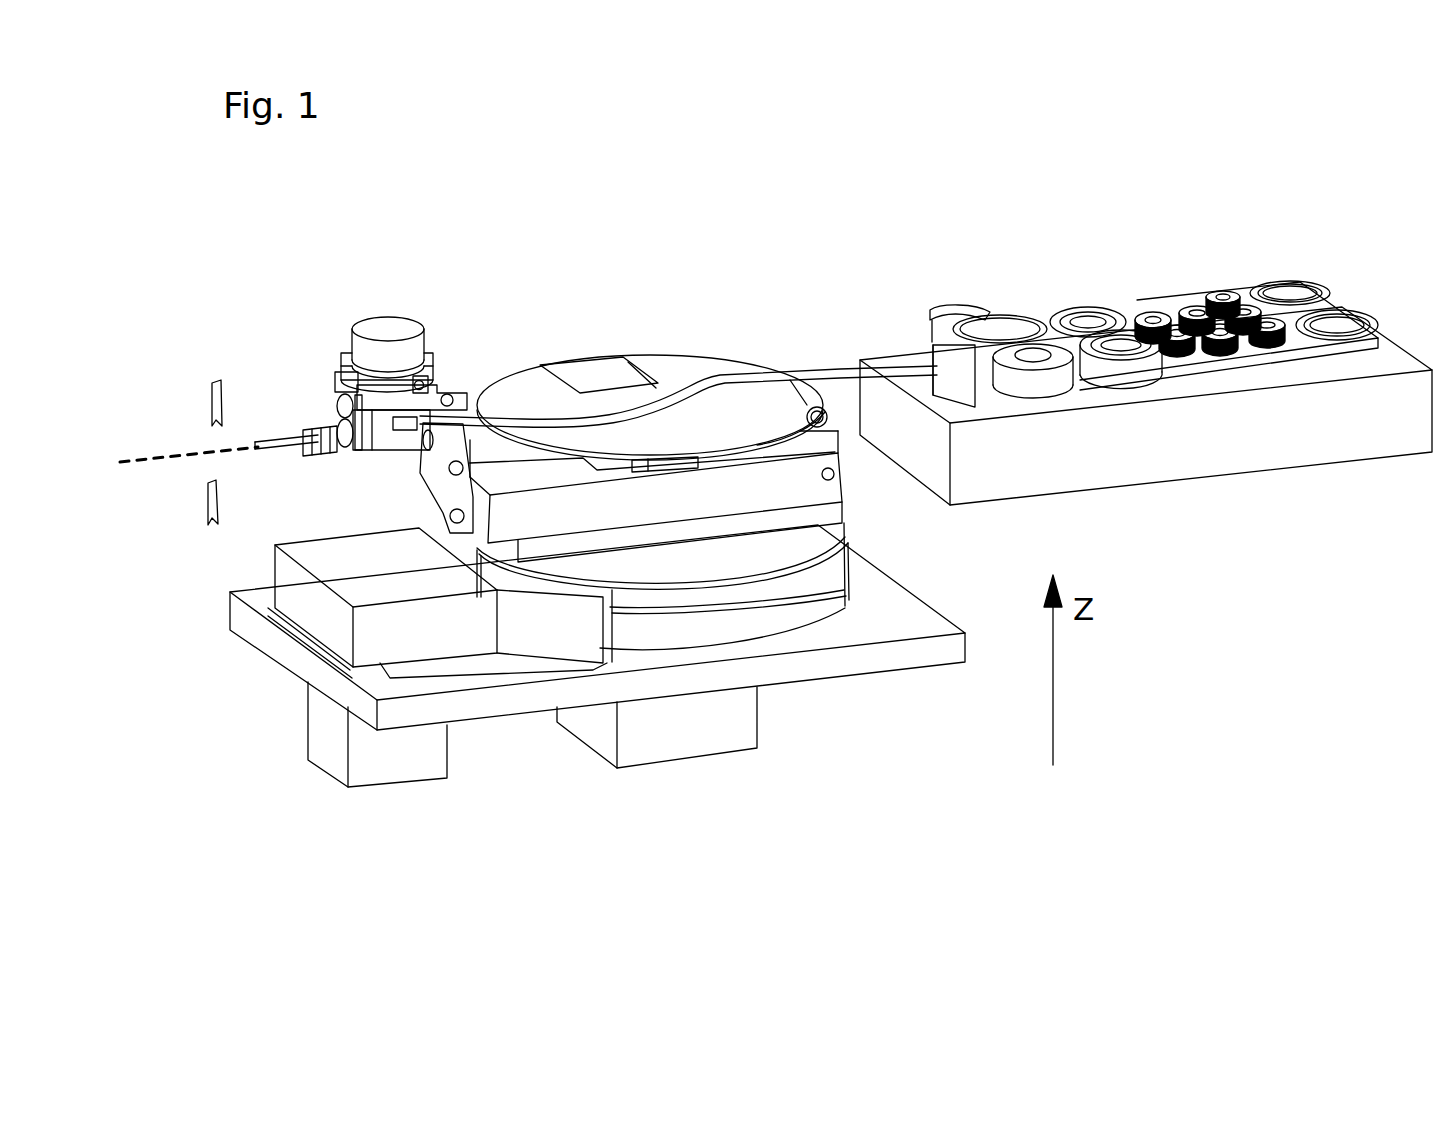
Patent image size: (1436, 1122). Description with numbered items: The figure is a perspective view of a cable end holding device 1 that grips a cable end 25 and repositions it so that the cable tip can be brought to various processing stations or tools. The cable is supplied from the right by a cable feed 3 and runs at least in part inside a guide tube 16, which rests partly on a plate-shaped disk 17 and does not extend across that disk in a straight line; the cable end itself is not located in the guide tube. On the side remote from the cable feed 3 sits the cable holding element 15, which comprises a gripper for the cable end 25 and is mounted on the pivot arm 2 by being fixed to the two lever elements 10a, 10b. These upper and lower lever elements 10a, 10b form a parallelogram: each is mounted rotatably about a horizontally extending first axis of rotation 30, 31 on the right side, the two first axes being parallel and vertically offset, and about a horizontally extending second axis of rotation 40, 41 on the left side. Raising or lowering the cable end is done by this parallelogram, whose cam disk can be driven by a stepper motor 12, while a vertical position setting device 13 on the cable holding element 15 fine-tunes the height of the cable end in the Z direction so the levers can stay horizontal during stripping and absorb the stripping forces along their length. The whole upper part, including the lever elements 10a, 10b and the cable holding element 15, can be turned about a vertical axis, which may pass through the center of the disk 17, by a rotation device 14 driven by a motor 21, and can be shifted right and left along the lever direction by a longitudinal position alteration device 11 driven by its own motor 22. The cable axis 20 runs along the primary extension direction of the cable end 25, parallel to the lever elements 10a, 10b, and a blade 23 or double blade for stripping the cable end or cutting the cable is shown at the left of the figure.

The cable end holding device 1 is at (570, 211).
The pivot arm 2 is at (658, 342).
The cable feed 3 is at (1188, 183).
The upper lever element 10a is at (487, 453).
The lower lever element 10b is at (473, 520).
The longitudinal position alteration device 11 is at (785, 495).
The stepper motor 12 is at (583, 378).
The vertical position setting device 13 is at (443, 400).
The rotation device 14 is at (750, 633).
The cable holding element 15 is at (367, 440).
The guide tube 16 is at (742, 377).
The plate-shaped disk 17 is at (687, 363).
The cable axis 20 is at (137, 462).
The motor 21 is at (403, 768).
The motor 22 is at (697, 738).
The blade 23 is at (213, 525).
The cable end 25 is at (272, 437).
The first axis of rotation 30 is at (822, 407).
The first axis of rotation 31 is at (834, 474).
The second axis of rotation 40 is at (452, 472).
The second axis of rotation 41 is at (452, 520).